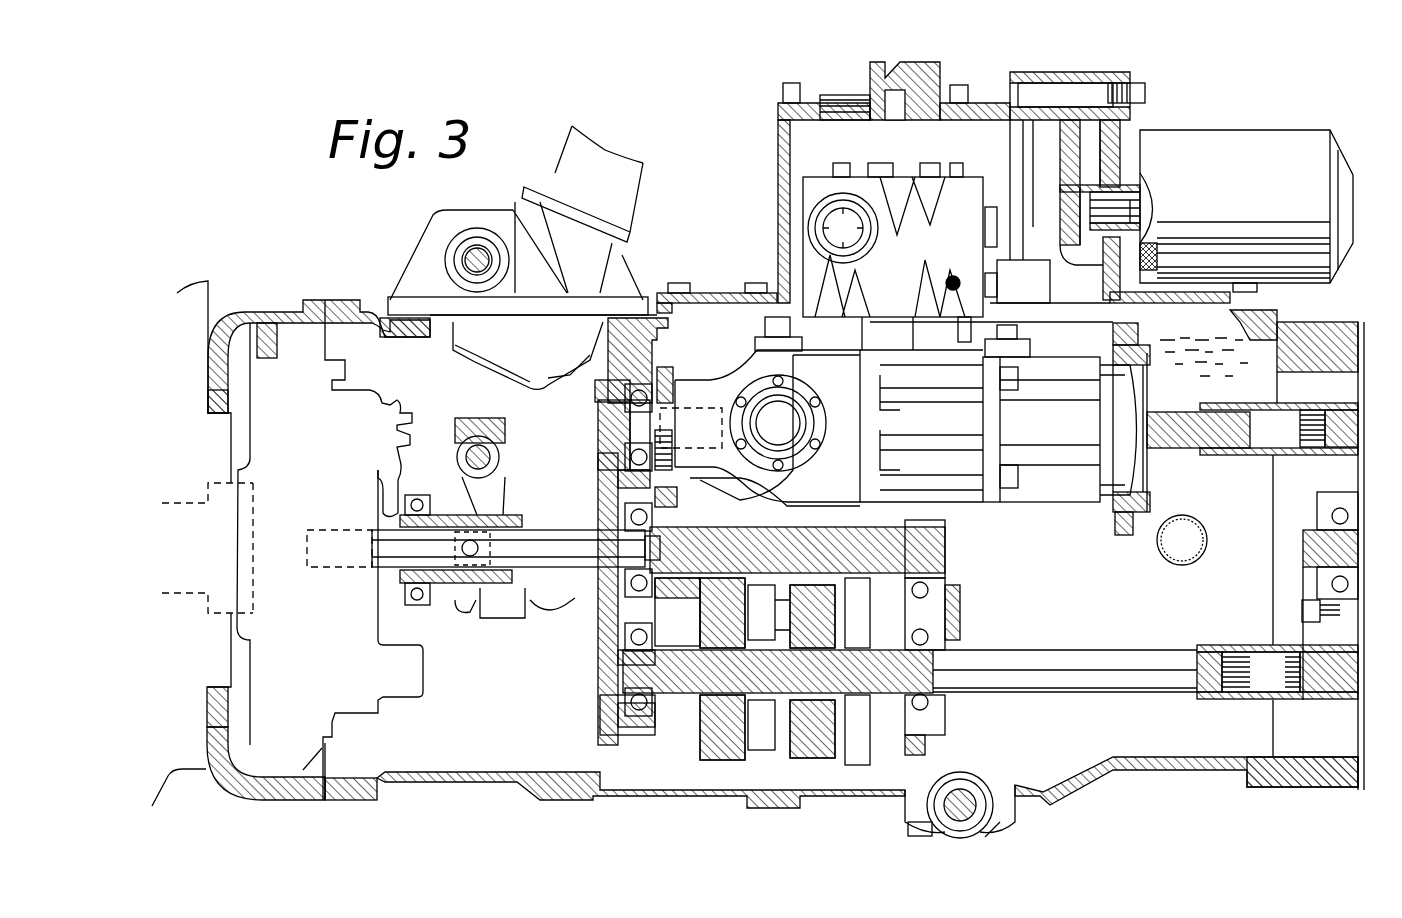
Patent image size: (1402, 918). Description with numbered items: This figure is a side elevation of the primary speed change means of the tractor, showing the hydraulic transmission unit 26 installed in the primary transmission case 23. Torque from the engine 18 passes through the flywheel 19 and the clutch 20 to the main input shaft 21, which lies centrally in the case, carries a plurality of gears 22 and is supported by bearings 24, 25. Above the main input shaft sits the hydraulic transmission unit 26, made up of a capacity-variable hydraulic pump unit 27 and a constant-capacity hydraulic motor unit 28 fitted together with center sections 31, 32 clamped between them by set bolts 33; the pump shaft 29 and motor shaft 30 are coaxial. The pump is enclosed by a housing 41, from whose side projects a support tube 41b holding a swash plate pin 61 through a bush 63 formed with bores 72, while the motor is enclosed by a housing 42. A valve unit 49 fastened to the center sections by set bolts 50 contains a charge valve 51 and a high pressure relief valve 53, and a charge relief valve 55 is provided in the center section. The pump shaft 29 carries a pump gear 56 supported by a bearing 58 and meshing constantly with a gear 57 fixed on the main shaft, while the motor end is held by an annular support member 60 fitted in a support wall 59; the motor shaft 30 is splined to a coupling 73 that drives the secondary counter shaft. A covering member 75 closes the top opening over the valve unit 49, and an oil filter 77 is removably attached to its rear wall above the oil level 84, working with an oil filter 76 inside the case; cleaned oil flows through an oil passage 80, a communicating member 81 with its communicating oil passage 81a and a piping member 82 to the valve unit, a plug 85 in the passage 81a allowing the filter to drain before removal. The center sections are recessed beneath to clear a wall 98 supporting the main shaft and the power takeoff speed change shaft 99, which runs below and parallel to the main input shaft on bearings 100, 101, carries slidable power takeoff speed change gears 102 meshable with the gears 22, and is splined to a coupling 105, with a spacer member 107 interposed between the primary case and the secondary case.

The engine 18 is at (204, 783).
The flywheel 19 is at (288, 768).
The clutch 20 is at (396, 380).
The main input shaft 21 is at (530, 530).
The gears 22 is at (804, 590).
The primary transmission case 23 is at (815, 797).
The bearing 24 is at (677, 612).
The bearing 25 is at (936, 590).
The hydraulic transmission unit 26 is at (1004, 523).
The hydraulic pump unit 27 is at (741, 358).
The hydraulic motor unit 28 is at (1062, 354).
The pump shaft 29 is at (600, 428).
The motor shaft 30 is at (1174, 448).
The center section 31 is at (860, 346).
The center section 32 is at (912, 317).
The set bolts 33 is at (1009, 465).
The housing 41 is at (745, 490).
The support tube 41b is at (752, 407).
The housing 42 is at (1068, 494).
The valve unit 49 is at (810, 172).
The set bolts 50 is at (880, 172).
The charge valve 51 is at (984, 228).
The high pressure relief valve 53 is at (857, 250).
The charge relief valve 55 is at (957, 338).
The pump gear 56 is at (662, 365).
The gear 57 is at (689, 480).
The bearing 58 is at (596, 392).
The support wall 59 is at (1122, 527).
The annular support member 60 is at (1150, 352).
The pin 61 is at (798, 408).
The bush 63 is at (808, 420).
The bores 72 is at (750, 426).
The coupling 73 is at (1262, 403).
The covering member 75 is at (778, 196).
The oil filter 76 is at (1198, 566).
The oil filter 77 is at (1220, 130).
The oil passage 80 is at (1095, 153).
The communicating member 81 is at (1101, 73).
The communicating oil passage 81a is at (1062, 83).
The piping member 82 is at (1008, 192).
The level of reserved oil 84 is at (1262, 328).
The plug 85 is at (1143, 92).
The wall 98 is at (930, 614).
The power takeoff speed change shaft 99 is at (1082, 662).
The bearing 100 is at (643, 710).
The bearing 101 is at (930, 704).
The power takeoff speed change gears 102 is at (788, 750).
The coupling 105 is at (1246, 700).
The spacer member 107 is at (1316, 786).